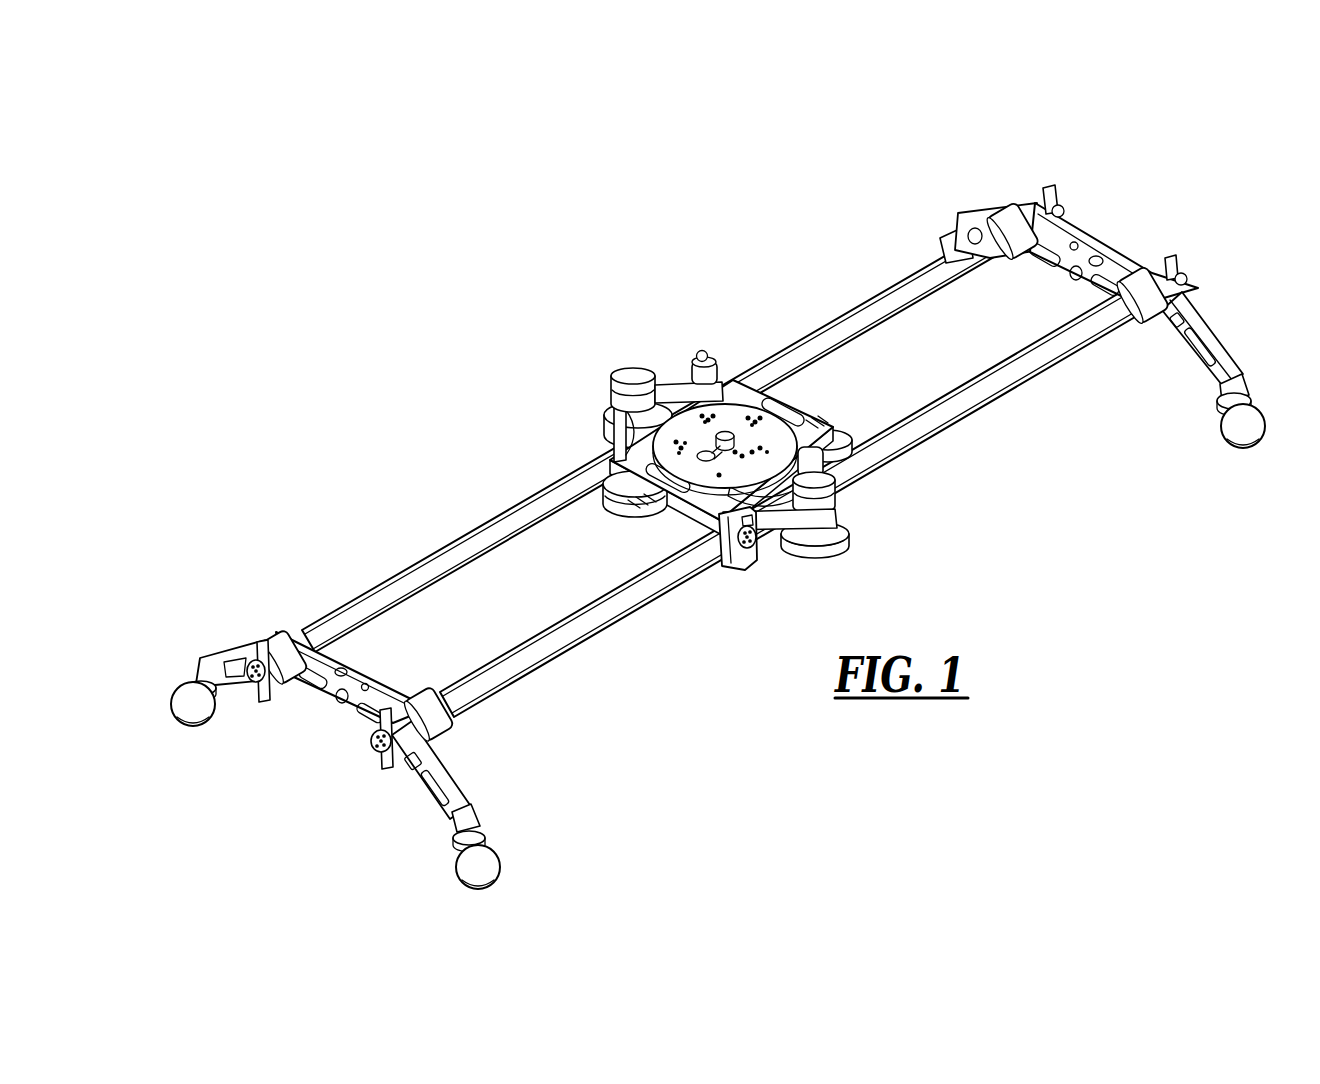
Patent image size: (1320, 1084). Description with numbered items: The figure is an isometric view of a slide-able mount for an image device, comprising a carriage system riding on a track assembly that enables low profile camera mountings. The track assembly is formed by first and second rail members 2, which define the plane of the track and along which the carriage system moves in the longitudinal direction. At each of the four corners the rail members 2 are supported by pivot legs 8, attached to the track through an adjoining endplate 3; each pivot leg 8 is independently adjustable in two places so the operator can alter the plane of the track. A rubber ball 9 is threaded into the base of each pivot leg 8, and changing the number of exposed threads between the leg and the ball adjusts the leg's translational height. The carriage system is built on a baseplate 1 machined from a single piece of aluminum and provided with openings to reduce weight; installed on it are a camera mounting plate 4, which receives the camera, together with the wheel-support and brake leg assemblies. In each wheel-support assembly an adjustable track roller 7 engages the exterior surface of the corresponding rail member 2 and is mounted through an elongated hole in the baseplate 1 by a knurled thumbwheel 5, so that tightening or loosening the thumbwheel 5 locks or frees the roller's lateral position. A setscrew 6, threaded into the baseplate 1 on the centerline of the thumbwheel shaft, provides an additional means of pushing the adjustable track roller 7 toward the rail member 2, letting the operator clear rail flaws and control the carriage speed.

The baseplate 1 is at (800, 407).
The rail member 2 is at (998, 415).
The endplate 3 is at (1103, 250).
The camera mounting plate 4 is at (731, 394).
The knurled thumbwheel 5 is at (600, 383).
The setscrew 6 is at (840, 518).
The adjustable track roller 7 is at (813, 562).
The pivot leg 8 is at (217, 645).
The rubber ball 9 is at (505, 873).